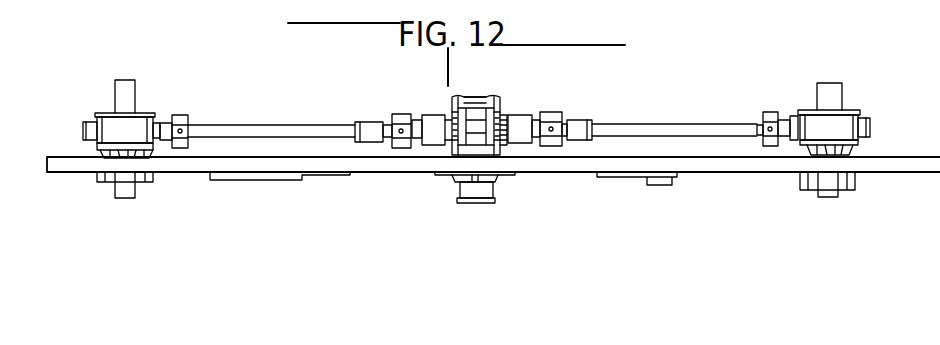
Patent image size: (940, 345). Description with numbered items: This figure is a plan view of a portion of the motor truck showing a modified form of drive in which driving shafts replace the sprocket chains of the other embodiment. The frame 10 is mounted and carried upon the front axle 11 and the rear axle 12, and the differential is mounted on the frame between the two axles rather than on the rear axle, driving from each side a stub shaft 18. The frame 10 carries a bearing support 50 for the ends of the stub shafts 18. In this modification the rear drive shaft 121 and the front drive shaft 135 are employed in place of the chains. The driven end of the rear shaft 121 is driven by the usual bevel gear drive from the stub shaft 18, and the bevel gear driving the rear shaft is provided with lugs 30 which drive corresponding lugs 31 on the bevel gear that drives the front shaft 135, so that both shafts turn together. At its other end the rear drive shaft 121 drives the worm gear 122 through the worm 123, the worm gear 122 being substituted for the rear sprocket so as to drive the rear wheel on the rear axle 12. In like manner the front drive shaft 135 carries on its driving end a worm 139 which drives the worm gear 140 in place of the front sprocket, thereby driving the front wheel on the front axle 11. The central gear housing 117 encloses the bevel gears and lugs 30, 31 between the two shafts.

The frame 10 is at (565, 167).
The front axle 11 is at (130, 93).
The rear axle 12 is at (830, 93).
The stub shaft 18 is at (481, 102).
The lugs 30 is at (507, 115).
The lugs 31 is at (465, 132).
The bearing support 50 is at (460, 182).
The central gearbox housing 117 is at (493, 100).
The drive shaft 121 is at (640, 130).
The worm gear 122 is at (833, 125).
The worm 123 is at (870, 130).
The drive shaft 135 is at (259, 135).
The worm 139 is at (84, 134).
The worm gear 140 is at (110, 123).